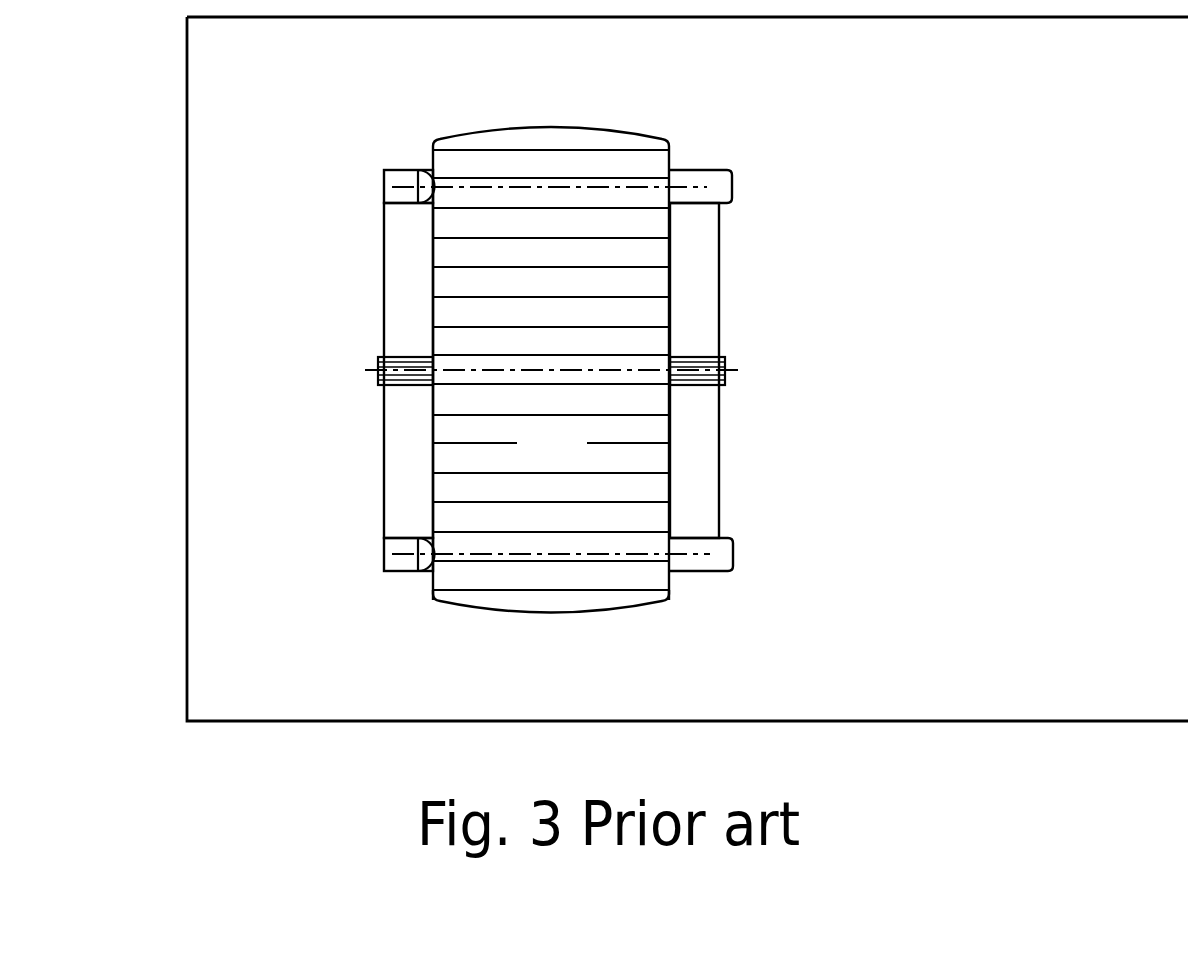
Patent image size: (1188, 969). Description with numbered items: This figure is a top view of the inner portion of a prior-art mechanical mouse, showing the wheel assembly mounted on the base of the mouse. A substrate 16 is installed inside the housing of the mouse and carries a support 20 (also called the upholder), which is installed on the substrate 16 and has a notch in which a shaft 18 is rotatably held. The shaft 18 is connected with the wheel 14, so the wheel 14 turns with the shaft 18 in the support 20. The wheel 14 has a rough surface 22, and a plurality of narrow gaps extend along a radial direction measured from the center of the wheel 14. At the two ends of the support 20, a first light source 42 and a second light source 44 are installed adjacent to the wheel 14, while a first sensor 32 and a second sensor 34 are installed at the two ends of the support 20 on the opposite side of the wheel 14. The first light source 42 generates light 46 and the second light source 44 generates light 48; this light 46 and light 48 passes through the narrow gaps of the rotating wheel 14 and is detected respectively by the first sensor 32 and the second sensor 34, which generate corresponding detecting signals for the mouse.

The wheel 14 is at (569, 356).
The substrate 16 is at (1028, 475).
The shaft 18 is at (380, 357).
The support 20 is at (407, 303).
The rough surface 22 is at (575, 457).
The first sensor 32 is at (732, 550).
The second sensor 34 is at (723, 185).
The first light source 42 is at (390, 560).
The second light source 44 is at (390, 178).
The light 46 is at (598, 553).
The light 48 is at (510, 187).